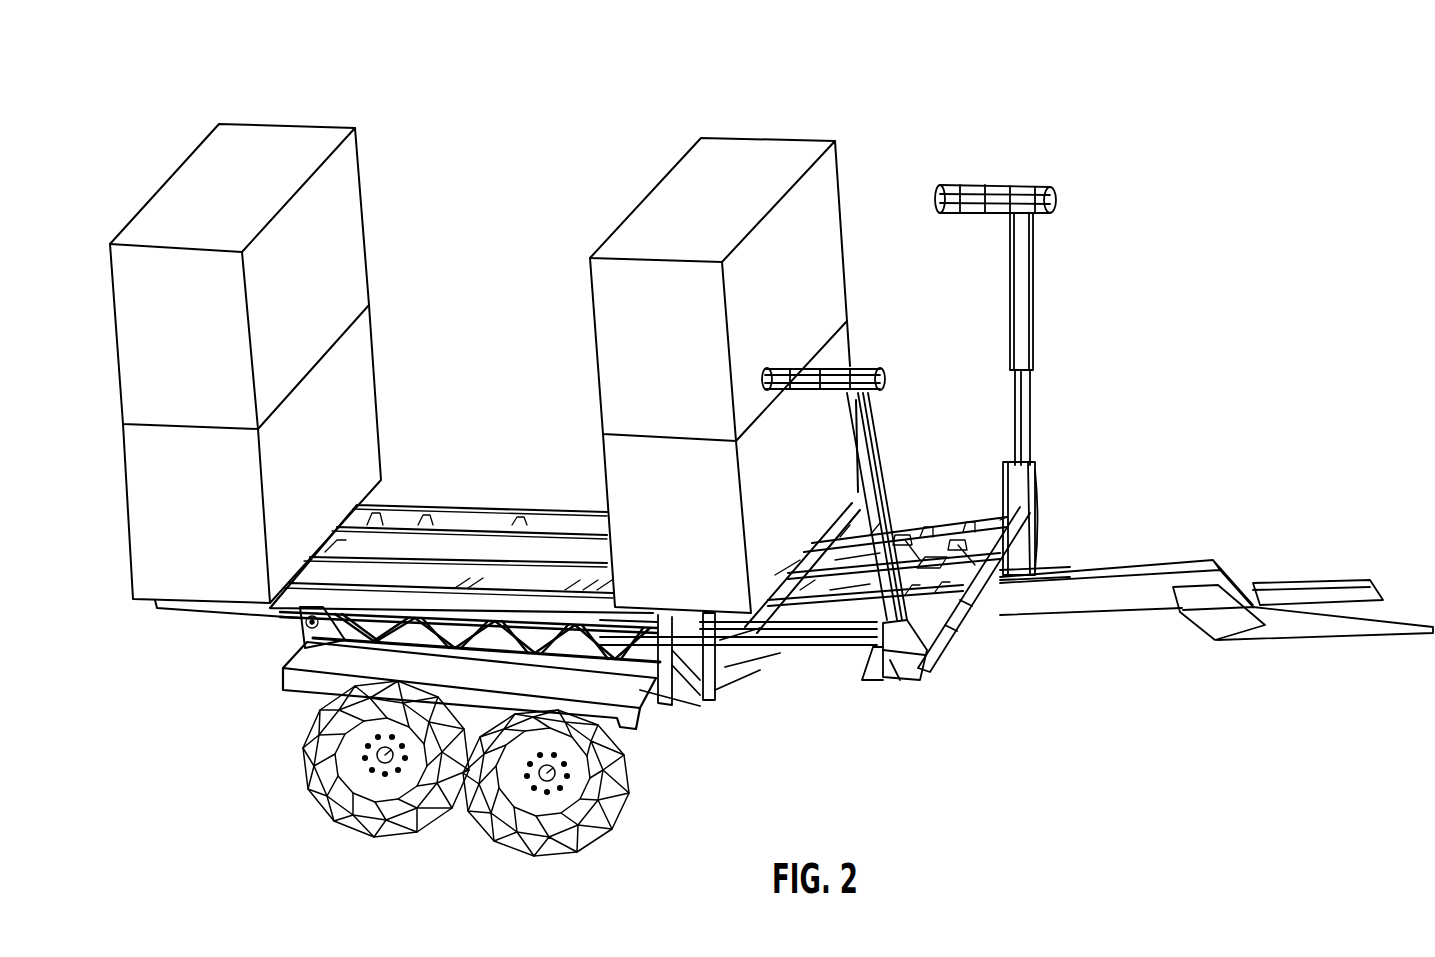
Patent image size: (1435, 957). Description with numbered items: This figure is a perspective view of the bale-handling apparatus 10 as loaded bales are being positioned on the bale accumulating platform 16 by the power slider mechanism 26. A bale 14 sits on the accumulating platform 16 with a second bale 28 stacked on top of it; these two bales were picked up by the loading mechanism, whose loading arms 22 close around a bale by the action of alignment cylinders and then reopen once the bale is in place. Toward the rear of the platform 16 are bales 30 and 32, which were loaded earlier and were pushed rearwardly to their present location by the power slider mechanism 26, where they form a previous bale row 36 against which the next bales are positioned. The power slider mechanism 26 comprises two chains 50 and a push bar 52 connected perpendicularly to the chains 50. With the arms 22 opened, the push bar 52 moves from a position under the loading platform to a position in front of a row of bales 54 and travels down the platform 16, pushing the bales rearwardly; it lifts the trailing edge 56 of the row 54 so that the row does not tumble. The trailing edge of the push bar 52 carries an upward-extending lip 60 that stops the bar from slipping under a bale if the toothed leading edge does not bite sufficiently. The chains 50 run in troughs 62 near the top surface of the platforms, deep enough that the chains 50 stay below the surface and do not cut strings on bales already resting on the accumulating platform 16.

The apparatus 10 is at (1029, 72).
The bale 14 is at (685, 544).
The bale accumulating platform 16 is at (490, 476).
The loading arms 22 is at (1026, 309).
The power slider mechanism 26 is at (800, 605).
The bale 28 is at (672, 363).
The bale 30 is at (206, 534).
The bale 32 is at (192, 348).
The previous bale row 36 is at (309, 98).
The chains 50 is at (977, 606).
The push bar 52 is at (812, 520).
The row of bales 54 is at (788, 113).
The trailing edge 56 is at (770, 571).
The lip 60 is at (786, 545).
The troughs 62 is at (955, 540).